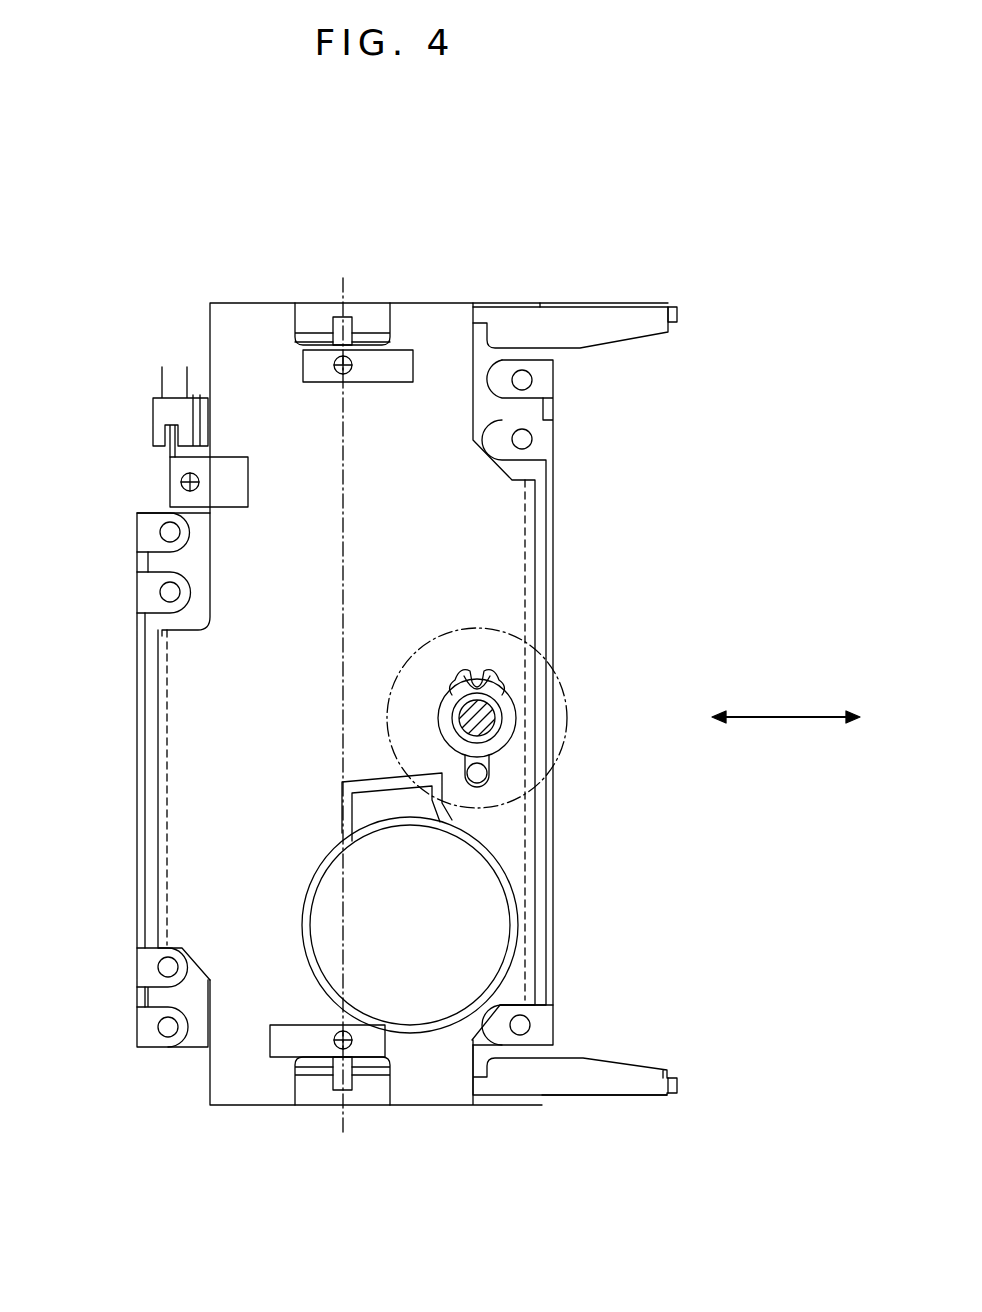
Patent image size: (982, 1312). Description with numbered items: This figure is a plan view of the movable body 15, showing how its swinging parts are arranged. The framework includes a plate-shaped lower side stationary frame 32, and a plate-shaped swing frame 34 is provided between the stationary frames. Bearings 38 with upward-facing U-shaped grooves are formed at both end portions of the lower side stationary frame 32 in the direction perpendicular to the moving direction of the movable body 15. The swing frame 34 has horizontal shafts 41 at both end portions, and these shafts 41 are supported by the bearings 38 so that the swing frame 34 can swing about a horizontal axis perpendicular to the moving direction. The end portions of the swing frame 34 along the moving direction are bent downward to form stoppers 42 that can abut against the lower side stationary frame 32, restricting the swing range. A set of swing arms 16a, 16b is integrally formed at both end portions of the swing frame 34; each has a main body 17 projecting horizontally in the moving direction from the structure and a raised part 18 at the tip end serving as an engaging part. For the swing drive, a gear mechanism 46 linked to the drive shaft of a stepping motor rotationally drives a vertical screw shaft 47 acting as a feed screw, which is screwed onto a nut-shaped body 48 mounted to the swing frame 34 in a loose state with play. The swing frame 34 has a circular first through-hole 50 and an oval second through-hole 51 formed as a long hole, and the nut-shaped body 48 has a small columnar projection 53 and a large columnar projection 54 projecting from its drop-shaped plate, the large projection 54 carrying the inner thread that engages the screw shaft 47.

The movable body 15 is at (132, 347).
The swing arm 16a is at (618, 293).
The swing arm 16b is at (613, 1105).
The main body 17 is at (570, 323).
The raised part 18 is at (680, 318).
The lower side stationary frame 32 is at (137, 770).
The swing frame 34 is at (228, 1083).
The bearing 38 is at (318, 330).
The shaft 41 is at (360, 343).
The stopper 42 is at (167, 732).
The gear mechanism 46 is at (483, 622).
The screw shaft 47 is at (493, 708).
The nut-shaped body 48 is at (503, 742).
The first through-hole 50 is at (490, 670).
The second through-hole 51 is at (488, 763).
The small columnar projection 53 is at (480, 785).
The large columnar projection 54 is at (502, 725).